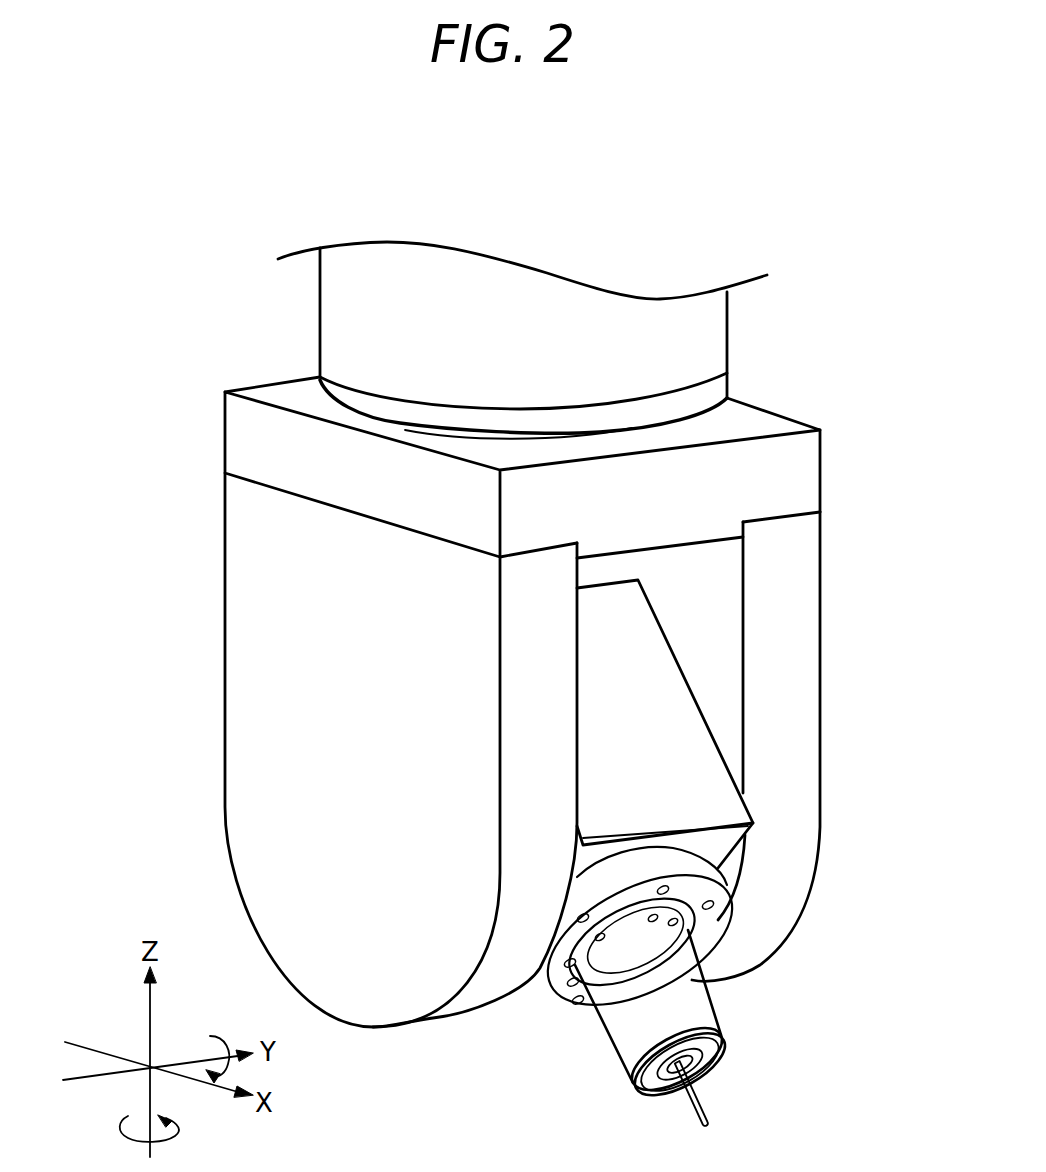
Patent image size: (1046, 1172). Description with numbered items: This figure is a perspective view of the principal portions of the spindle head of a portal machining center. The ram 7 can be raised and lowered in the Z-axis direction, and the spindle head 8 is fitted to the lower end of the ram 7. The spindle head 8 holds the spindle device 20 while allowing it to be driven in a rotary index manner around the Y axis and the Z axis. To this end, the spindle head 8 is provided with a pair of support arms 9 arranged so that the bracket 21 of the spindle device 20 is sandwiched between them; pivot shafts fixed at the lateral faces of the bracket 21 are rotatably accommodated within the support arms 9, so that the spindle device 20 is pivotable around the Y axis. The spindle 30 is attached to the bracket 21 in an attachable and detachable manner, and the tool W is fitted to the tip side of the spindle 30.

The ram 7 is at (685, 340).
The spindle head 8 is at (796, 421).
The support arms 9 is at (276, 702).
The spindle device 20 is at (716, 1010).
The bracket 21 is at (655, 750).
The spindle 30 is at (624, 1025).
The tool W is at (703, 1092).